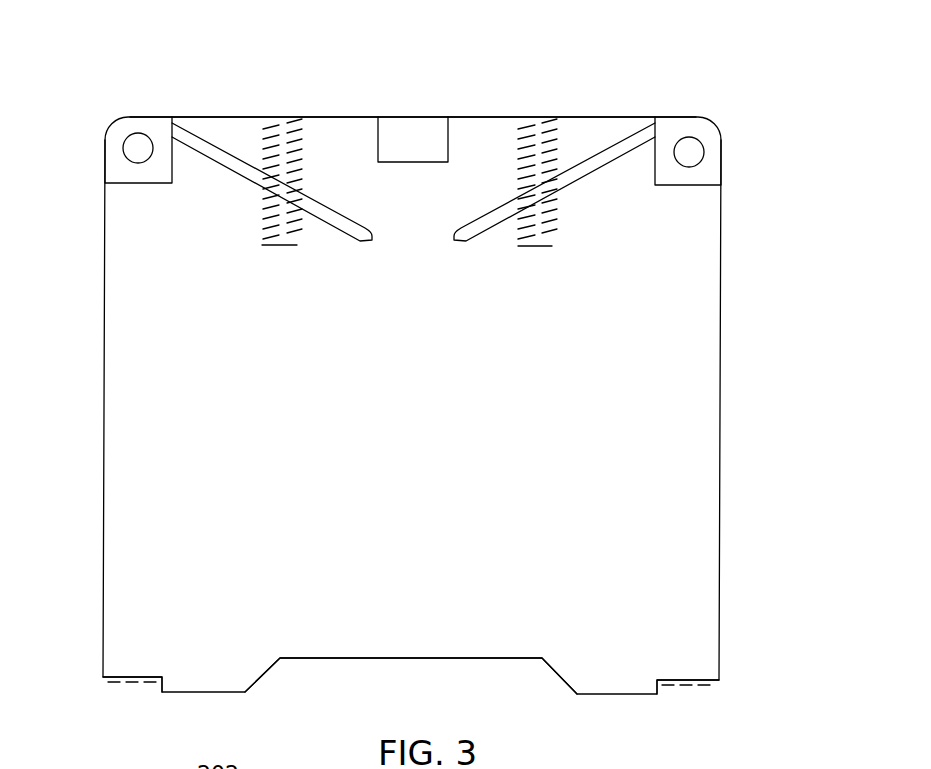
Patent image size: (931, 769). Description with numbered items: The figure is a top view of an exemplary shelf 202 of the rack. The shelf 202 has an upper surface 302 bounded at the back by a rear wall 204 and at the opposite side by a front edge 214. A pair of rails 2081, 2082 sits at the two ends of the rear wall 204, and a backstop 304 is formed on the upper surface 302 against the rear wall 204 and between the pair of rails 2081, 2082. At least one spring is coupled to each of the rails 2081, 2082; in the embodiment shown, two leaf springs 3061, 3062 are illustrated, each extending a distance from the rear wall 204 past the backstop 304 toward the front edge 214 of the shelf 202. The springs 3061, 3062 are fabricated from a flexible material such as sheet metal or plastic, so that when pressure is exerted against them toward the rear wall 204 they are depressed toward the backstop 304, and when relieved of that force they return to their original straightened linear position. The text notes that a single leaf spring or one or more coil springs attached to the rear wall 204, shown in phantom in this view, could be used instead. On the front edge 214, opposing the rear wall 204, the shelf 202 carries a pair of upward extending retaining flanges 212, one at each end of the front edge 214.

The shelf 202 is at (802, 716).
The rear wall 204 is at (587, 117).
The first rail 2081 is at (126, 117).
The second rail 2082 is at (692, 117).
The retaining flange 212 is at (123, 687).
The front edge 214 is at (313, 658).
The upper surface 302 is at (703, 477).
The backstop 304 is at (413, 137).
The first spring 3061 is at (335, 228).
The second spring 3062 is at (573, 185).